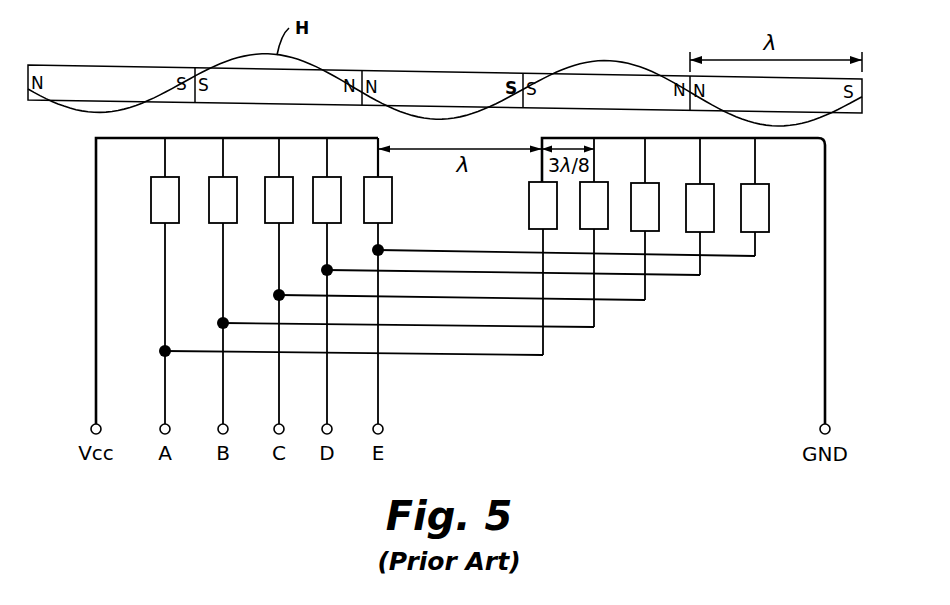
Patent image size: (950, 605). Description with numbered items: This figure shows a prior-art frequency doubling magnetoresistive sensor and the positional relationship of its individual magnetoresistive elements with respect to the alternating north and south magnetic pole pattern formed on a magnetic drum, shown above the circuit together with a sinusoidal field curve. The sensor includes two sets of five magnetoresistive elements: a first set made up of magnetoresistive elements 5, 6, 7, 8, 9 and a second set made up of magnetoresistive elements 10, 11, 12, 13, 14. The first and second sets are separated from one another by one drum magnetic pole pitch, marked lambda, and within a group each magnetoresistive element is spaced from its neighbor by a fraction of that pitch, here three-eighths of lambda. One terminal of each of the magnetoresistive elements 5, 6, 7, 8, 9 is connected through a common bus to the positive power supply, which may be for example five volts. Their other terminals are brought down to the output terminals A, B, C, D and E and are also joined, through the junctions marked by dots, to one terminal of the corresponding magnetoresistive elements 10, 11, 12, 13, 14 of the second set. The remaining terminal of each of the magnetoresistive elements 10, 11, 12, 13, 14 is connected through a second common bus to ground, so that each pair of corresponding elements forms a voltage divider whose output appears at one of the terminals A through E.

The magnetoresistive element 5 is at (165, 281).
The magnetoresistive element 6 is at (223, 281).
The magnetoresistive element 7 is at (279, 281).
The magnetoresistive element 8 is at (327, 281).
The magnetoresistive element 9 is at (378, 300).
The magnetoresistive element 10 is at (543, 268).
The magnetoresistive element 11 is at (594, 232).
The magnetoresistive element 12 is at (645, 219).
The magnetoresistive element 13 is at (700, 206).
The magnetoresistive element 14 is at (755, 197).